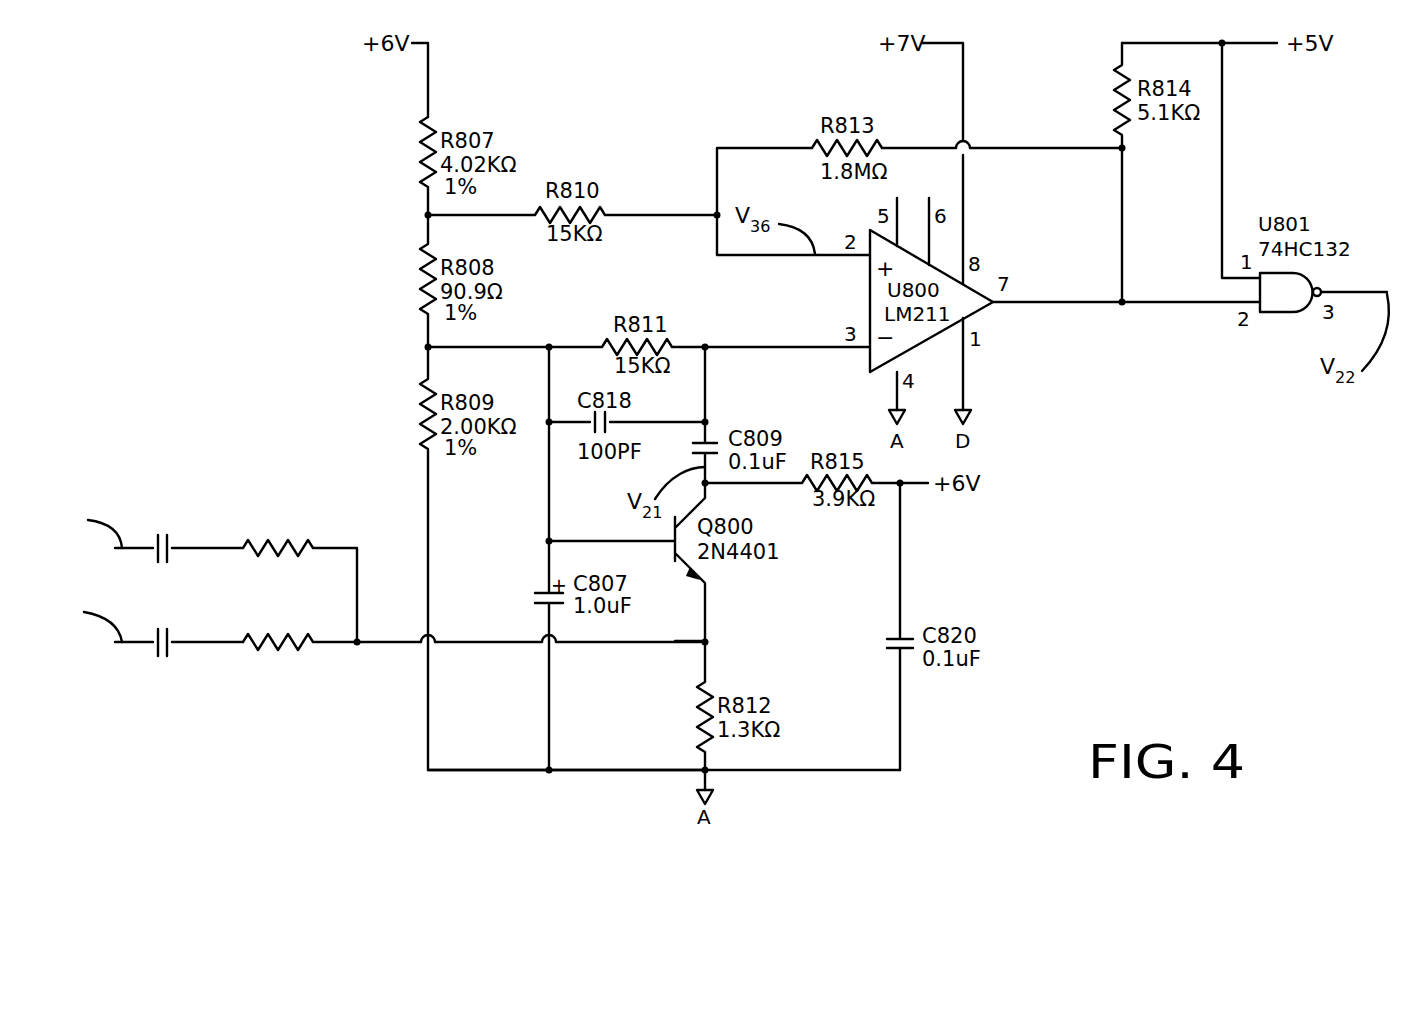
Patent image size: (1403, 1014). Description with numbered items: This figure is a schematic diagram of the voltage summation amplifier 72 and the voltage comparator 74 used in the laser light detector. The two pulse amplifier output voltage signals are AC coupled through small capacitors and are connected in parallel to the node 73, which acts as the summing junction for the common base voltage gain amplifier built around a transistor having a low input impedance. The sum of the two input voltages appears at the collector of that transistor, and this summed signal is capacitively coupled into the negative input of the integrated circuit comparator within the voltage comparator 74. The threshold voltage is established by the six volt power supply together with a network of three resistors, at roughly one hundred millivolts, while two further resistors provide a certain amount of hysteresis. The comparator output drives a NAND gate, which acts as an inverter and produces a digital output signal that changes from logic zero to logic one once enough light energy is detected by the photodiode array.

The voltage summation amplifier 72 is at (189, 713).
The node 73 is at (708, 641).
The voltage comparator 74 is at (590, 794).